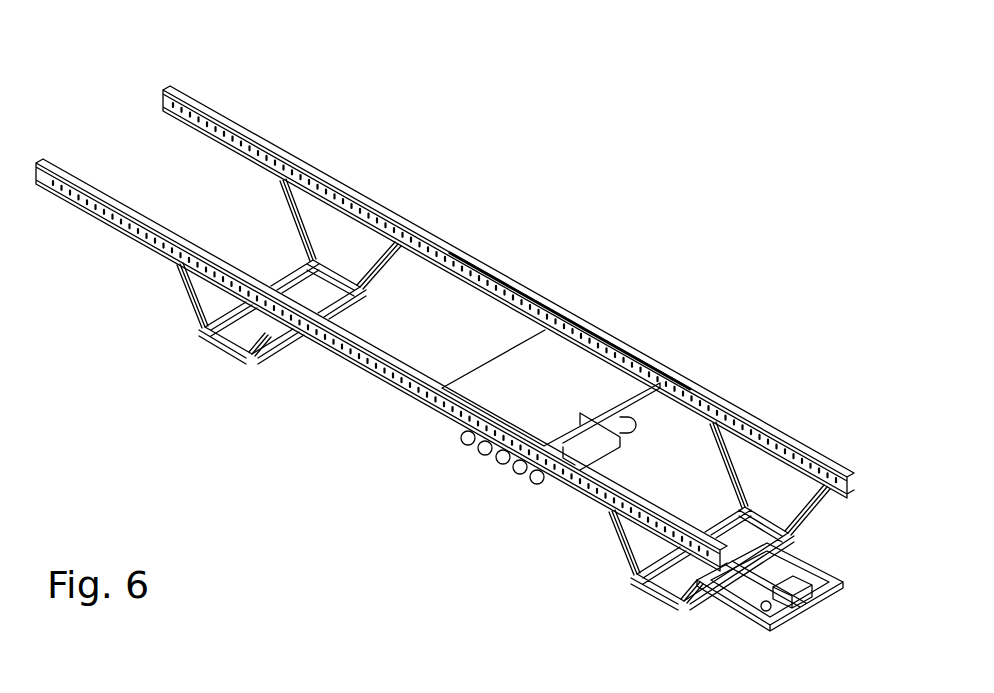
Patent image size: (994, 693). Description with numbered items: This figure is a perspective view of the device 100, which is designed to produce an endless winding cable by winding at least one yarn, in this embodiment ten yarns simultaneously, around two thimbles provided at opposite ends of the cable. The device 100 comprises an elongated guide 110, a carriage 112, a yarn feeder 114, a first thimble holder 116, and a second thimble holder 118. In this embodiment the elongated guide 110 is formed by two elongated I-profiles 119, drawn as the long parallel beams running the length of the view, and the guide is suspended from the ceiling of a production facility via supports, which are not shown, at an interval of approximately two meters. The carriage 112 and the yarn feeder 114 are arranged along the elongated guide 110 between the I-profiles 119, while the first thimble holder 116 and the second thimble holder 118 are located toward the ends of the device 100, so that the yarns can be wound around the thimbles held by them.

The device 100 is at (566, 190).
The elongated guide 110 is at (574, 259).
The carriage 112 is at (616, 322).
The yarn feeder 114 is at (663, 415).
The first thimble holder 116 is at (790, 414).
The second thimble holder 118 is at (371, 176).
The elongated I-profiles 119 is at (470, 253).